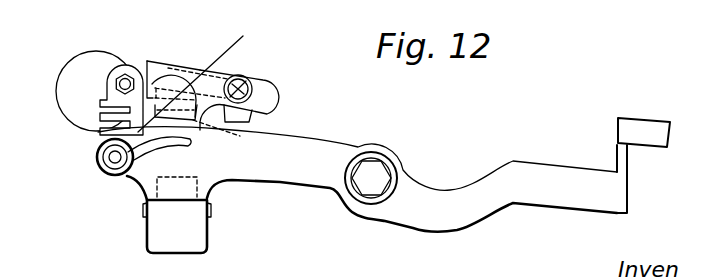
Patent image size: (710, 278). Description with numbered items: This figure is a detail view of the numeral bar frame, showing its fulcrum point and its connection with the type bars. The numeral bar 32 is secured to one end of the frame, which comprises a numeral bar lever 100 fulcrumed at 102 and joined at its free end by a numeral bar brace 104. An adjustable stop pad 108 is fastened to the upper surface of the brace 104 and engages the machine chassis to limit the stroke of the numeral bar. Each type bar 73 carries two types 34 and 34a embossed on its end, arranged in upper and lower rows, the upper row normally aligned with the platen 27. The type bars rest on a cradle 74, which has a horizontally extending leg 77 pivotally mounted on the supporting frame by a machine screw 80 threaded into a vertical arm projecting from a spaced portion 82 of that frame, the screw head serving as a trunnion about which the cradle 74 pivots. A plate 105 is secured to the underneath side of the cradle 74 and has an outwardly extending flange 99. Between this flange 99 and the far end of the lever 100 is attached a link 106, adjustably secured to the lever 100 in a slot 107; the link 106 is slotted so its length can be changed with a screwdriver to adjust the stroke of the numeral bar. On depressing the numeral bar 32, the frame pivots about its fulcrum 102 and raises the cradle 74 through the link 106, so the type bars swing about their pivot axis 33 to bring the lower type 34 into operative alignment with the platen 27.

The platen 27 is at (70, 53).
The type 34a is at (143, 66).
The type 34 is at (166, 76).
The type bar 73 is at (148, 61).
The leg 77 is at (266, 86).
The flange 99 is at (196, 77).
The machine screw 80 is at (242, 78).
The axis 33 is at (248, 97).
The portion 82 is at (252, 120).
The cradle 74 is at (230, 140).
The plate 105 is at (188, 126).
The link 106 is at (98, 142).
The slot 107 is at (146, 171).
The numeral bar brace 104 is at (146, 212).
The adjustable stop pad 108 is at (199, 197).
The numeral bar lever 100 is at (521, 168).
The fulcrum 102 is at (367, 187).
The numeral bar 32 is at (647, 122).